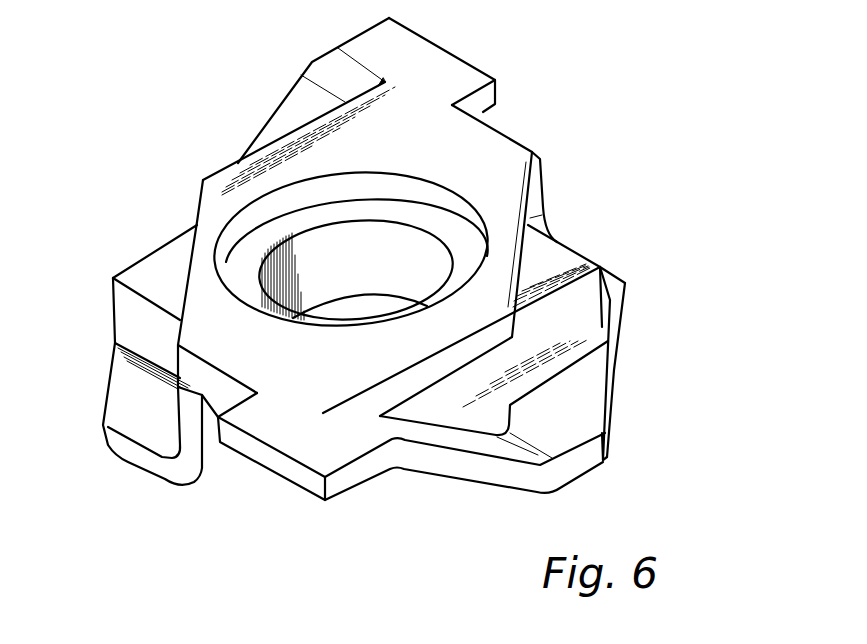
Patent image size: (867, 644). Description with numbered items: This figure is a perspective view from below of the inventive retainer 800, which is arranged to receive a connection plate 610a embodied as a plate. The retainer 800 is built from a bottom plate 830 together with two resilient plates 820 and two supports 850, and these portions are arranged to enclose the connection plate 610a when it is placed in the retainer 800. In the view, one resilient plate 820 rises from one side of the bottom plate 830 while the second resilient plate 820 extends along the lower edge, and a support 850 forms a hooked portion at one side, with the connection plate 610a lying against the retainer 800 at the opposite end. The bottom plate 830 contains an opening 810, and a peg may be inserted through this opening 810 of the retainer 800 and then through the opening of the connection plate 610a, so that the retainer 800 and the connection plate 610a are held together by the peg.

The retainer 800 is at (596, 138).
The opening 810 is at (383, 267).
The resilient plates 820 is at (300, 113).
The bottom plate 830 is at (482, 302).
The connection plate 610a is at (565, 312).
The supports 850 is at (183, 467).